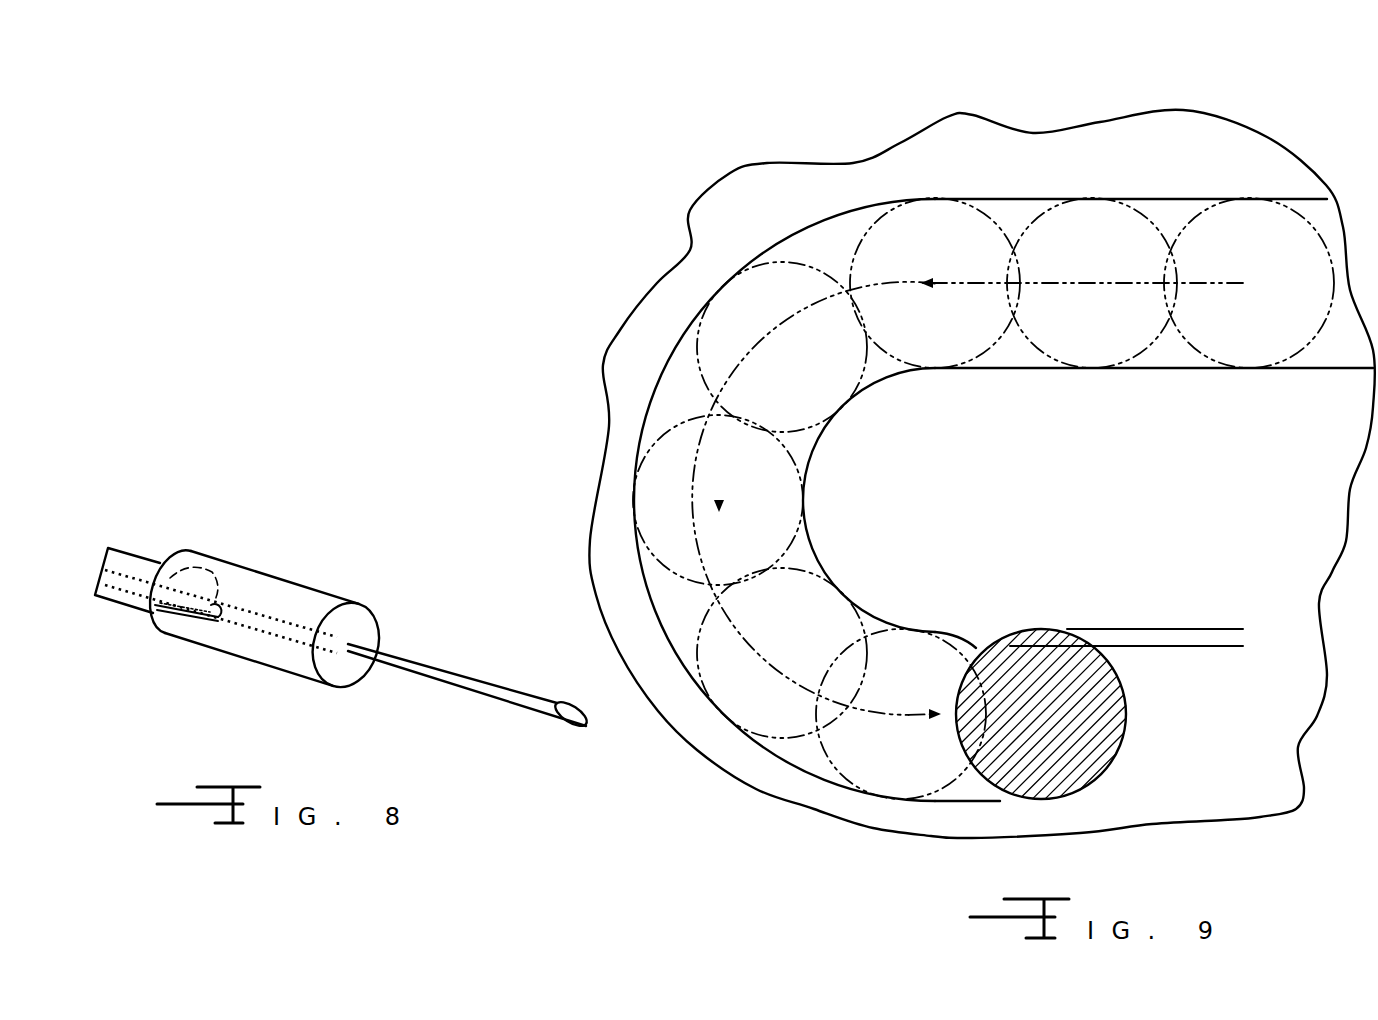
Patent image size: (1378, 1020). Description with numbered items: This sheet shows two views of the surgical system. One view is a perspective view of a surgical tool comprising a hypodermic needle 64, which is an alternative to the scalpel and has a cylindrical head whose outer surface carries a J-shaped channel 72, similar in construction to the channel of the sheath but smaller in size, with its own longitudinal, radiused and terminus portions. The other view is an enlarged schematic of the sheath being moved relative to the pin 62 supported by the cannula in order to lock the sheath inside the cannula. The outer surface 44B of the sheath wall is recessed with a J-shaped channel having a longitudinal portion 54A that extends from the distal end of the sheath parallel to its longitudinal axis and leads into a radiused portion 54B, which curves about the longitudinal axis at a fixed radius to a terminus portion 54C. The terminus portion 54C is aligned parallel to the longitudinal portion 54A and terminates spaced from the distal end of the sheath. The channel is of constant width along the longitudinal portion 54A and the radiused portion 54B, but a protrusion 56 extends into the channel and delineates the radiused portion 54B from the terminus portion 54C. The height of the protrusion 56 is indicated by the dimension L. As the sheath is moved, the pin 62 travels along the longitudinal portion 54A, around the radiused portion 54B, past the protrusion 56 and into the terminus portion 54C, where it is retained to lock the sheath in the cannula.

In FIG. 9, the outer surface of the sheath wall 44B is at (1128, 150).
In FIG. 9, the longitudinal portion 54A is at (1213, 198).
In FIG. 9, the radiused portion 54B is at (683, 333).
In FIG. 9, the terminus portion 54C is at (1044, 626).
In FIG. 9, the protrusion 56 is at (976, 644).
In FIG. 9, the pin 62 is at (937, 223).
In FIG. 8, the hypodermic needle 64 is at (450, 667).
In FIG. 8, the J-shaped channel 72 is at (207, 630).
In FIG. 9, the height of the protrusion L is at (1225, 646).